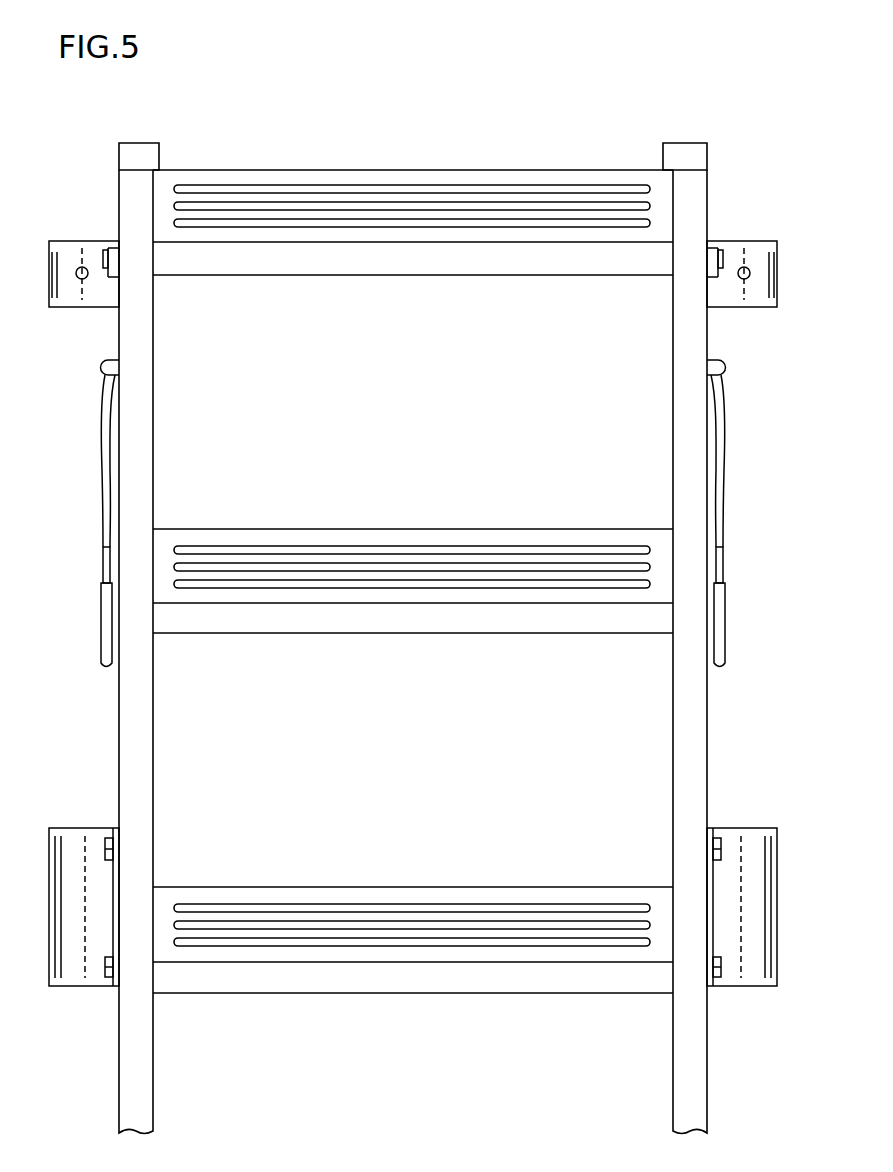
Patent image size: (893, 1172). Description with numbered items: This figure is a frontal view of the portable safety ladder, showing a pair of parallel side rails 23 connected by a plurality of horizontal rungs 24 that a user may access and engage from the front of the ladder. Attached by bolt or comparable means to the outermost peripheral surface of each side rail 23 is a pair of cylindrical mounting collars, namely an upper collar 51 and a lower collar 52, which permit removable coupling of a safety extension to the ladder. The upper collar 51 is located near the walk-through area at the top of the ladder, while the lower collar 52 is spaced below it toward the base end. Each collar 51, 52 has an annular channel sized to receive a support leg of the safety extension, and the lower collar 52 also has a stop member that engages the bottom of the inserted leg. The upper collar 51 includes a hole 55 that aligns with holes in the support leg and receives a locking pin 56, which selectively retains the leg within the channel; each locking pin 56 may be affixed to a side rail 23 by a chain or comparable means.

The side rail 23 is at (126, 758).
The horizontal rung 24 is at (413, 185).
The upper collar 51 is at (68, 297).
The lower collar 52 is at (75, 962).
The hole 55 is at (84, 268).
The locking pin 56 is at (105, 635).